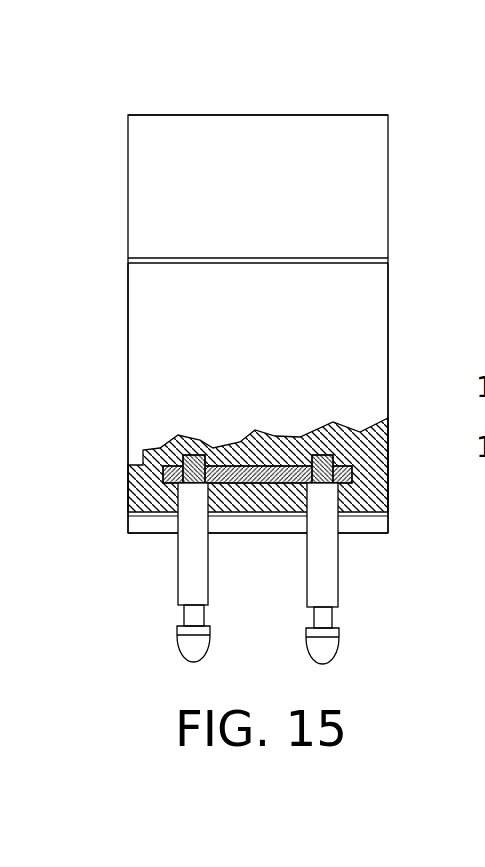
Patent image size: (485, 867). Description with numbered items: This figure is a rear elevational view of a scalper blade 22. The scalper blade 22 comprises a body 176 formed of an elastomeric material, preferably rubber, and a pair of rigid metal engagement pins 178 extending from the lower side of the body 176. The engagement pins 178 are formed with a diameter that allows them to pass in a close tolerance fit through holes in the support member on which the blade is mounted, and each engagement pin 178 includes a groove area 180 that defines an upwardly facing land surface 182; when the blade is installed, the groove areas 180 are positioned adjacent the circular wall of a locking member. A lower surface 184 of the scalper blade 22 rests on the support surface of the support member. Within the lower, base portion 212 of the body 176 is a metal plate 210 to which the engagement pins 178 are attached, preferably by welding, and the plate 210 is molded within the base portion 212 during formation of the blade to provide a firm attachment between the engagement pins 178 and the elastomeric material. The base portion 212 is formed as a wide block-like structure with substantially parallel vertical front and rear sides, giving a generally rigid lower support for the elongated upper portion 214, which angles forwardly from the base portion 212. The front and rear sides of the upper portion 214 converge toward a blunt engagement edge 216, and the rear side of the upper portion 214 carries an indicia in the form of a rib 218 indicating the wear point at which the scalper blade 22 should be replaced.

The scalper blade 22 is at (96, 277).
The body 176 is at (124, 330).
The engagement pins 178 is at (307, 564).
The groove area 180 is at (184, 613).
The land surface 182 is at (176, 634).
The lower surface 184 is at (131, 550).
The metal plate 210 is at (163, 474).
The base portion 212 is at (388, 467).
The upper portion 214 is at (128, 202).
The engagement edge 216 is at (208, 115).
The rib 218 is at (360, 257).